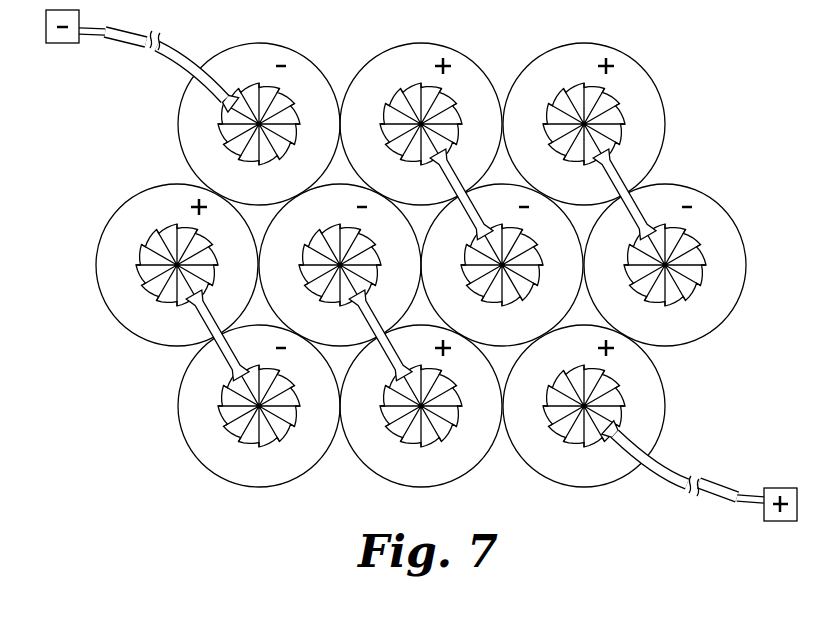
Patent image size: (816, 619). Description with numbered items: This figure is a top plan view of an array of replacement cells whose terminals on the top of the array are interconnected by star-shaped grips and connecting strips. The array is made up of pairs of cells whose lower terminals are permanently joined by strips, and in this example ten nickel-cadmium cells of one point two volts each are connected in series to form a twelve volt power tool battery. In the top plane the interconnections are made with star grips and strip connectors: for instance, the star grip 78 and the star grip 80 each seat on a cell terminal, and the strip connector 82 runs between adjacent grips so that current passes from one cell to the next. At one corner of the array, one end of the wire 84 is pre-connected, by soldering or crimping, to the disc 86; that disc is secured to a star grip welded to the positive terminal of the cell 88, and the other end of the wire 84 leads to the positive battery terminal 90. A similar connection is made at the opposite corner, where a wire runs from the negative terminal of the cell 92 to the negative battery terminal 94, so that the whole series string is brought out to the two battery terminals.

The star grip 78 is at (157, 235).
The star grip 80 is at (230, 422).
The strip connector 82 is at (165, 345).
The wire 84 is at (673, 466).
The disc 86 is at (573, 432).
The cell 88 is at (668, 408).
The positive battery terminal 90 is at (777, 522).
The cell 92 is at (308, 75).
The negative battery terminal 94 is at (60, 44).